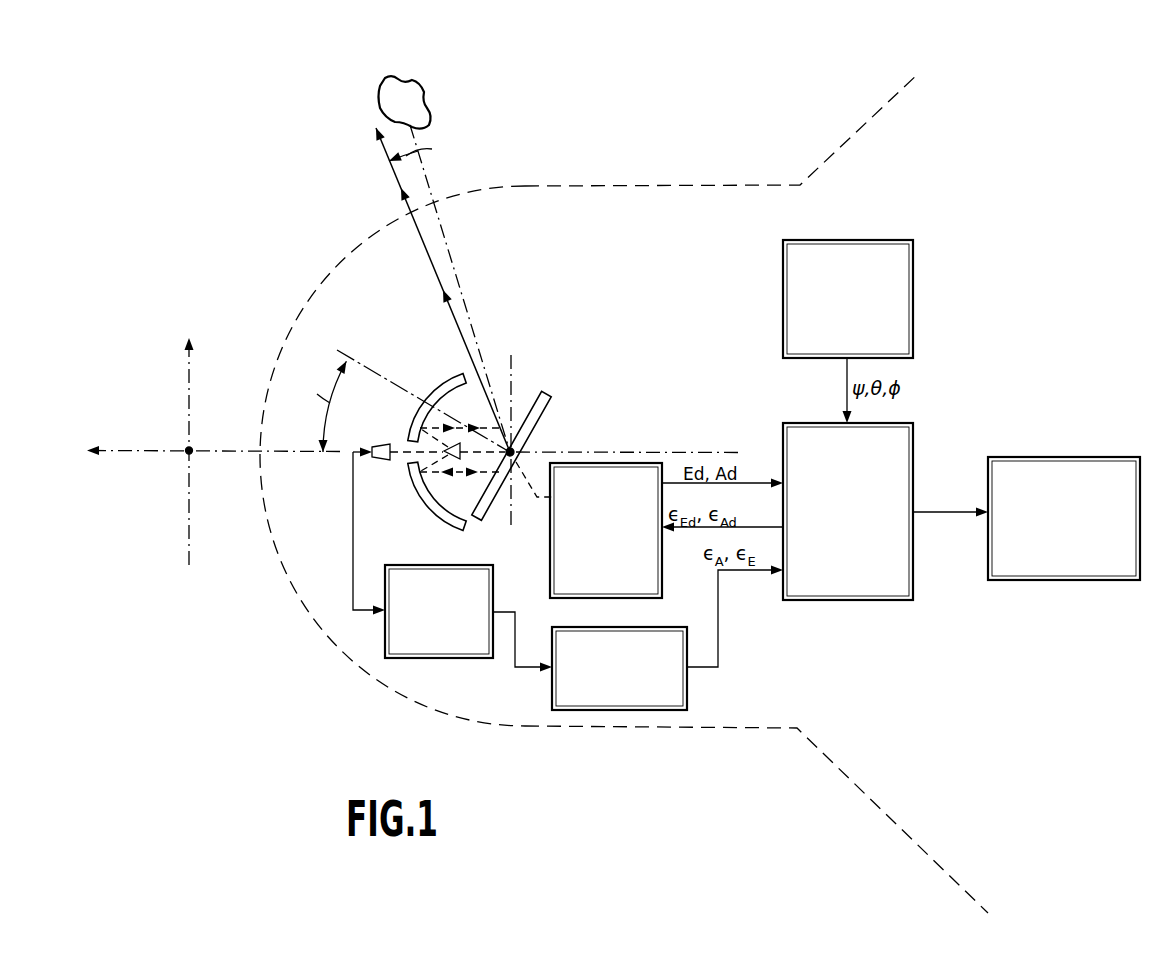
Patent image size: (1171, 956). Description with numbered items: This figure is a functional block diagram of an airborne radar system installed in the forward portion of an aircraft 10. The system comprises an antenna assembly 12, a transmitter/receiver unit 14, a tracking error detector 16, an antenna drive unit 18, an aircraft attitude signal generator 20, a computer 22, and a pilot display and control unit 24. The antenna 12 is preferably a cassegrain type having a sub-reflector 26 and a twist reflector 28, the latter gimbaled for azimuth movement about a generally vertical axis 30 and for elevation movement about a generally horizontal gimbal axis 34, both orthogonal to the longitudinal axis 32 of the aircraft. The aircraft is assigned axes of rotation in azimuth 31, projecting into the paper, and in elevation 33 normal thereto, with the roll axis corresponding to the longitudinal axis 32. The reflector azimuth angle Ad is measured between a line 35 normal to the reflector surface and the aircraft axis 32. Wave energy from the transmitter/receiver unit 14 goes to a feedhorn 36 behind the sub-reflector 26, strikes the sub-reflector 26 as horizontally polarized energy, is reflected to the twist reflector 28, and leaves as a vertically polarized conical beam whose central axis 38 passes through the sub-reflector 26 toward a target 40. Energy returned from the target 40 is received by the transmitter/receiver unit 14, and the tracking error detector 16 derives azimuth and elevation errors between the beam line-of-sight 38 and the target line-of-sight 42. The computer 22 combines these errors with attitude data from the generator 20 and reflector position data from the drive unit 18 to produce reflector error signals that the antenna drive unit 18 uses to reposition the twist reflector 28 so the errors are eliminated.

The aircraft 10 is at (674, 180).
The antenna assembly 12 is at (468, 454).
The transmitter/receiver unit 14 is at (466, 658).
The tracking error detector 16 is at (687, 700).
The antenna drive unit 18 is at (550, 566).
The aircraft attitude signal generator 20 is at (907, 311).
The computer 22 is at (907, 454).
The pilot display and control unit 24 is at (1043, 457).
The sub-reflector 26 is at (447, 376).
The twist reflector 28 is at (548, 393).
The vertically disposed axis 30 is at (518, 447).
The aircraft azimuth axis of rotation 31 is at (195, 446).
The longitudinal axis of the aircraft 32 is at (160, 449).
The aircraft elevation axis of rotation 33 is at (188, 503).
The gimbal axis 34 is at (513, 356).
The line normal to the reflector surface 35 is at (338, 353).
The feedhorn 36 is at (383, 445).
The beam line-of-sight 38 is at (432, 268).
The target 40 is at (425, 113).
The target line-of-sight 42 is at (458, 283).